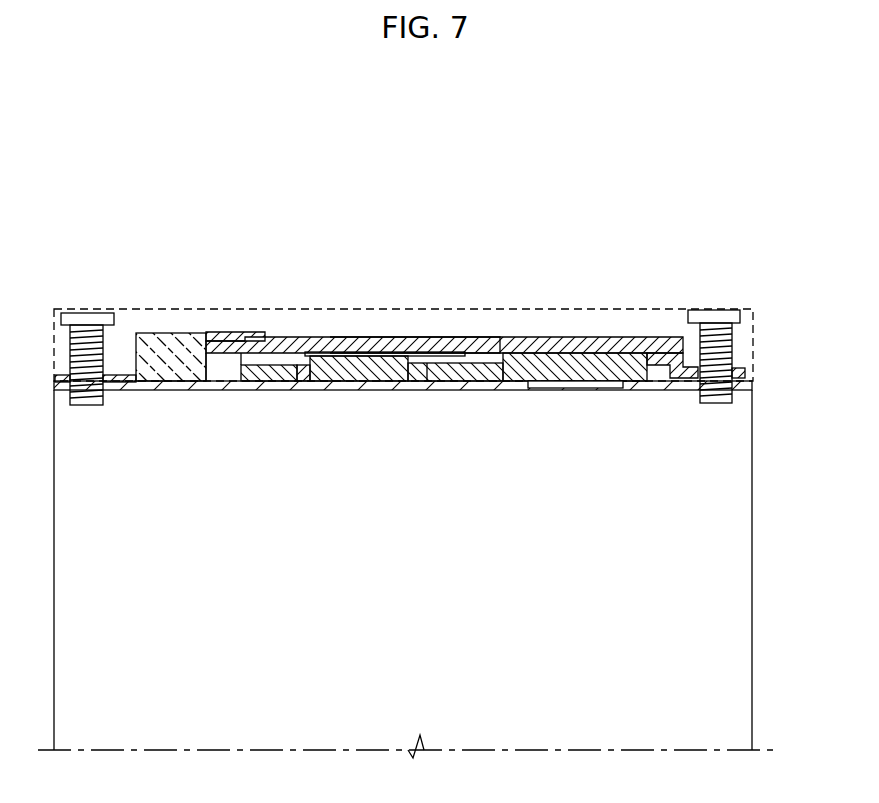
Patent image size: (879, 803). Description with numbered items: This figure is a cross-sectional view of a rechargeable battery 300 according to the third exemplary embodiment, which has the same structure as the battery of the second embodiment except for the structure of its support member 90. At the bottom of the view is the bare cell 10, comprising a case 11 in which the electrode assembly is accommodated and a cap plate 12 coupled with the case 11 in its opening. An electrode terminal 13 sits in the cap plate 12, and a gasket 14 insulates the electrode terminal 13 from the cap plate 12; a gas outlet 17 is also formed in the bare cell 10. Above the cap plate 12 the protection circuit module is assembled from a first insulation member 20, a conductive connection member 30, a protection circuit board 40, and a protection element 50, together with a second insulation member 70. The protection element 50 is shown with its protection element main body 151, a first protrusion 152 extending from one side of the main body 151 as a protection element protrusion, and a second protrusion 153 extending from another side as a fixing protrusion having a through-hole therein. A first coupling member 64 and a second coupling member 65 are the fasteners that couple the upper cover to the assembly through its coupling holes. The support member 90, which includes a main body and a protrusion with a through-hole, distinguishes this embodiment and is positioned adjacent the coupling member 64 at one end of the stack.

The rechargeable battery 300 is at (402, 186).
The bare cell 10 is at (764, 600).
The case 11 is at (752, 520).
The cap plate 12 is at (456, 372).
The electrode terminal 13 is at (365, 368).
The gasket 14 is at (305, 363).
The gas outlet 17 is at (572, 382).
The first insulation member 20 is at (282, 352).
The conductive connection member 30 is at (400, 348).
The protection circuit board 40 is at (487, 368).
The protection element 50 is at (150, 326).
The first coupling member 64 is at (712, 310).
The second coupling member 65 is at (87, 312).
The second insulation member 70 is at (535, 360).
The support member 90 is at (678, 345).
The protection element main body 151 is at (174, 341).
The first protrusion 152 is at (232, 332).
The second protrusion 153 is at (118, 372).